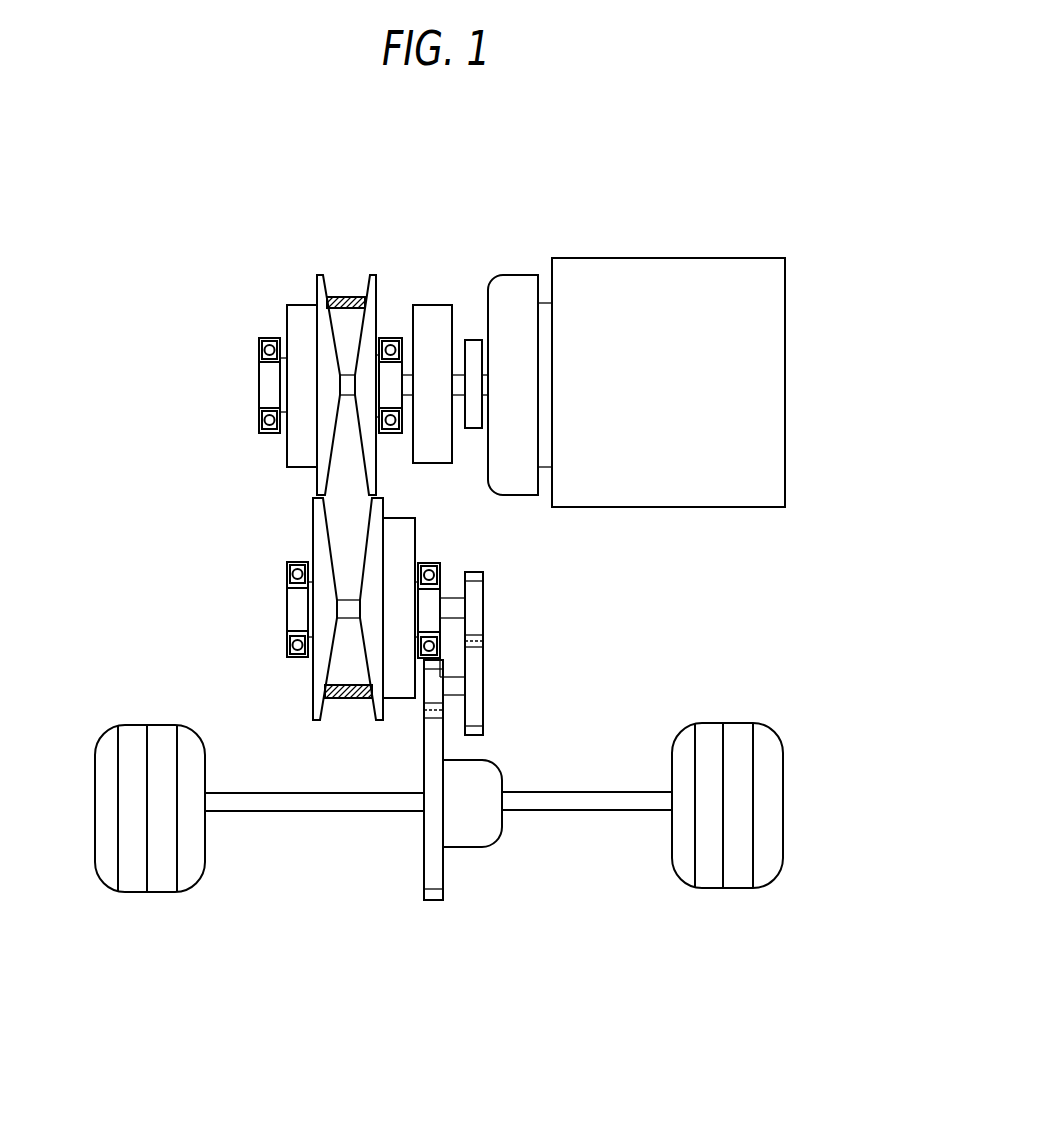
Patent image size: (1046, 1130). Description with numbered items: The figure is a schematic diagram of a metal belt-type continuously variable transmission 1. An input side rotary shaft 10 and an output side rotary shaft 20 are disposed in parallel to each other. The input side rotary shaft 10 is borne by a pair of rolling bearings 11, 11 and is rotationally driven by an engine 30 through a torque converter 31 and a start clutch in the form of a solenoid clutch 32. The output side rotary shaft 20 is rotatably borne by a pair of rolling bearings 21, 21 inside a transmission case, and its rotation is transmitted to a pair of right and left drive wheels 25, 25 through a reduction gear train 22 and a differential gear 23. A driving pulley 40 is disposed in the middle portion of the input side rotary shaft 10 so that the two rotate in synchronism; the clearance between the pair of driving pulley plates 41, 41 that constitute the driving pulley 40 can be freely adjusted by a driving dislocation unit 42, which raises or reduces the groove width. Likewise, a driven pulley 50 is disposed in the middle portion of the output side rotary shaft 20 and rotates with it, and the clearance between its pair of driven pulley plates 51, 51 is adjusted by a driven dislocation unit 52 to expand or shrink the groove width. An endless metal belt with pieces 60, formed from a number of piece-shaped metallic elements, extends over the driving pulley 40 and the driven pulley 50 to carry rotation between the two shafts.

The metal belt-type continuously variable transmission 1 is at (240, 237).
The input side rotary shaft 10 is at (265, 392).
The rolling bearings 11 is at (265, 414).
The output side rotary shaft 20 is at (298, 609).
The rolling bearings 21 is at (287, 634).
The reduction gear train 22 is at (473, 607).
The differential gear 23 is at (473, 683).
The drive wheels 25 is at (162, 875).
The engine 30 is at (673, 268).
The torque converter 31 is at (518, 283).
The solenoid clutch 32 is at (434, 308).
The driving pulley 40 is at (344, 329).
The driving pulley plates 41 is at (392, 210).
The driving dislocation unit 42 is at (290, 322).
The driven pulley 50 is at (348, 698).
The driven pulley plates 51 is at (318, 720).
The driven dislocation unit 52 is at (398, 534).
The metal belt with pieces 60 is at (347, 512).